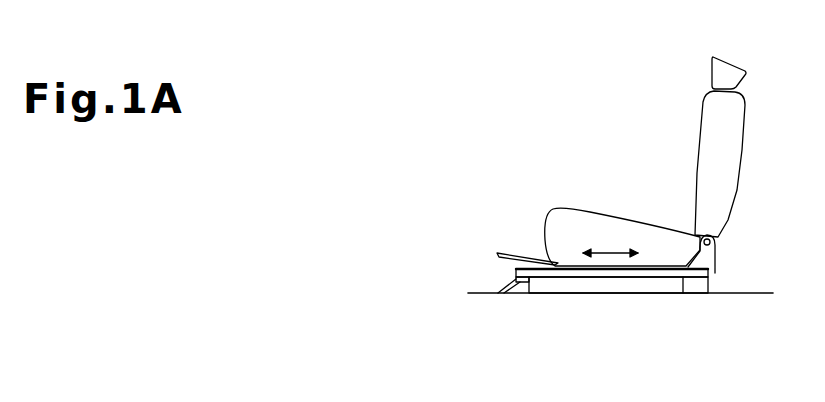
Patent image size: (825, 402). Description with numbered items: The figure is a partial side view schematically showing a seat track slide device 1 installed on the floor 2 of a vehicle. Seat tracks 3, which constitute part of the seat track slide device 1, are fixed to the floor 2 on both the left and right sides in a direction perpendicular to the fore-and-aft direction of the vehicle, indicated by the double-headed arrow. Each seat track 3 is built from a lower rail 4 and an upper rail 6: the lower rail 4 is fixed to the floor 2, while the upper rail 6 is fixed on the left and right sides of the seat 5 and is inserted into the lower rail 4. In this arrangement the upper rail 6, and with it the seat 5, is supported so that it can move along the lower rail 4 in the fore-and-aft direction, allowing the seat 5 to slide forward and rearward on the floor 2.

The seat track slide device 1 is at (585, 290).
The floor 2 is at (478, 292).
The seat track 3 is at (583, 278).
The lower rail 4 is at (620, 277).
The seat 5 is at (663, 238).
The upper rail 6 is at (717, 270).